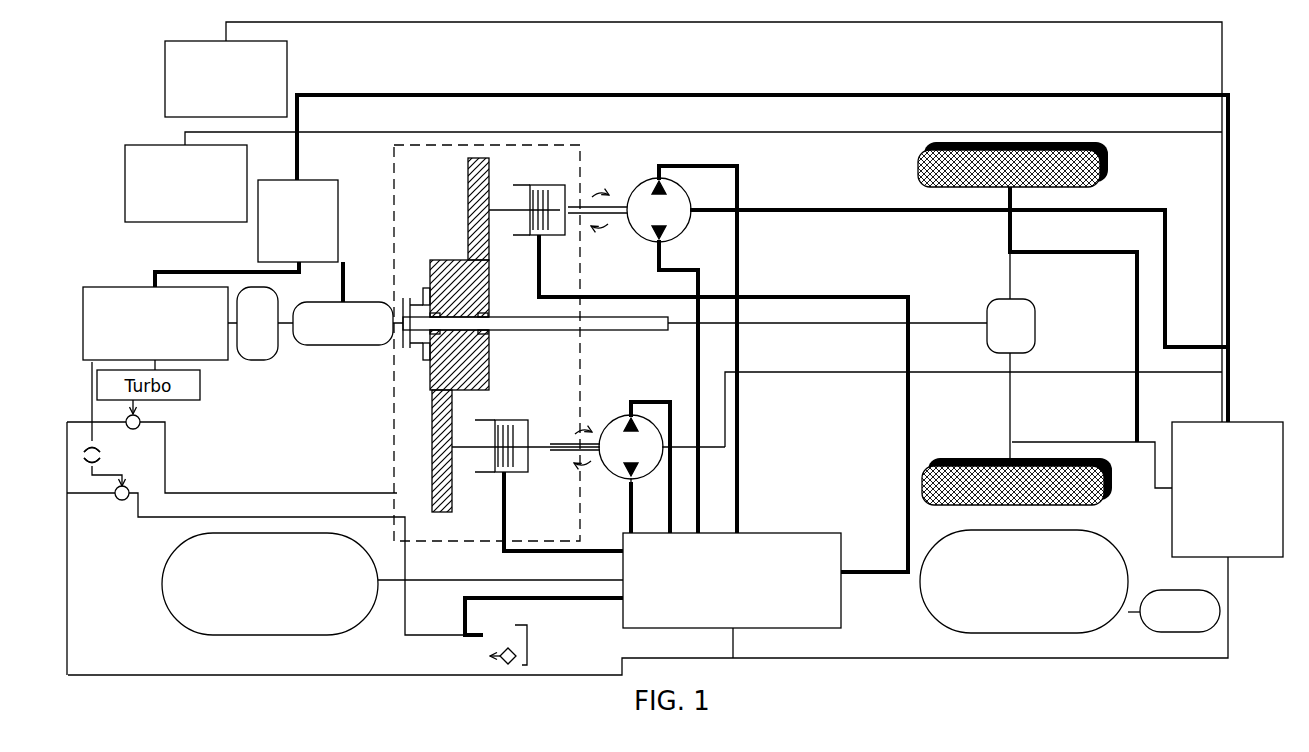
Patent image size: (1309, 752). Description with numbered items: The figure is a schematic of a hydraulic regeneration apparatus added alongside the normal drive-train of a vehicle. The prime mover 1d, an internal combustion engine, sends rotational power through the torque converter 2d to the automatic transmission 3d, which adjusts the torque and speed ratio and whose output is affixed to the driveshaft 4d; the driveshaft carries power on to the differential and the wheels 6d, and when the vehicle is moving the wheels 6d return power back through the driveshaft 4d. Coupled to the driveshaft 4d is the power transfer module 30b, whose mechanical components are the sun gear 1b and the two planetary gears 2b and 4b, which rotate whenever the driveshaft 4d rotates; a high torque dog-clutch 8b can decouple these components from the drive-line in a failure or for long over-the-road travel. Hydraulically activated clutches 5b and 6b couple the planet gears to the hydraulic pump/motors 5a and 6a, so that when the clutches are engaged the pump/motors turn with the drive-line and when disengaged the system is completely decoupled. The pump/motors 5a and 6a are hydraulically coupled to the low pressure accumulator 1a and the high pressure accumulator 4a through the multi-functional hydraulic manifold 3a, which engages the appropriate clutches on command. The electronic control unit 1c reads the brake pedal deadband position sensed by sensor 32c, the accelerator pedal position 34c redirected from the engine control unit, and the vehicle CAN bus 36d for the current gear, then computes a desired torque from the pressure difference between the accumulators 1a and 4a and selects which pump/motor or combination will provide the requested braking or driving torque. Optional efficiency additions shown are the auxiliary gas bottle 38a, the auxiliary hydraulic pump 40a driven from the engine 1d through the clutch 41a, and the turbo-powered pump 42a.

The accelerator pedal position 34c is at (165, 80).
The brake pedal deadband travel sensor 32c is at (124, 145).
The vehicle CAN bus 36d is at (320, 179).
The prime mover 1d is at (97, 284).
The clutch 41a is at (85, 450).
The turbo-powered pump 42a is at (128, 431).
The auxiliary hydraulic pump 40a is at (119, 503).
The low pressure accumulator 1a is at (172, 616).
The torque converter 2d is at (259, 363).
The automatic transmission 3d is at (346, 346).
The power transfer module (PTM) 30b is at (489, 136).
The planetary gear 4b is at (467, 192).
The sun gear 1b is at (428, 272).
The dog-clutch 8b is at (410, 352).
The planetary gear 2b is at (432, 437).
The driveshaft 4d is at (600, 339).
The hydraulically activated clutch 6b is at (529, 241).
The hydraulic pump/motor 6a is at (649, 245).
The hydraulically activated clutch 5b is at (492, 481).
The hydraulic pump/motor 5a is at (611, 478).
The wheels 6d is at (918, 184).
The multi-functional hydraulic manifold 3a is at (613, 618).
The high pressure accumulator 4a is at (945, 618).
The auxiliary gas bottle 38a is at (1163, 589).
The electronic control unit 1c is at (1168, 532).